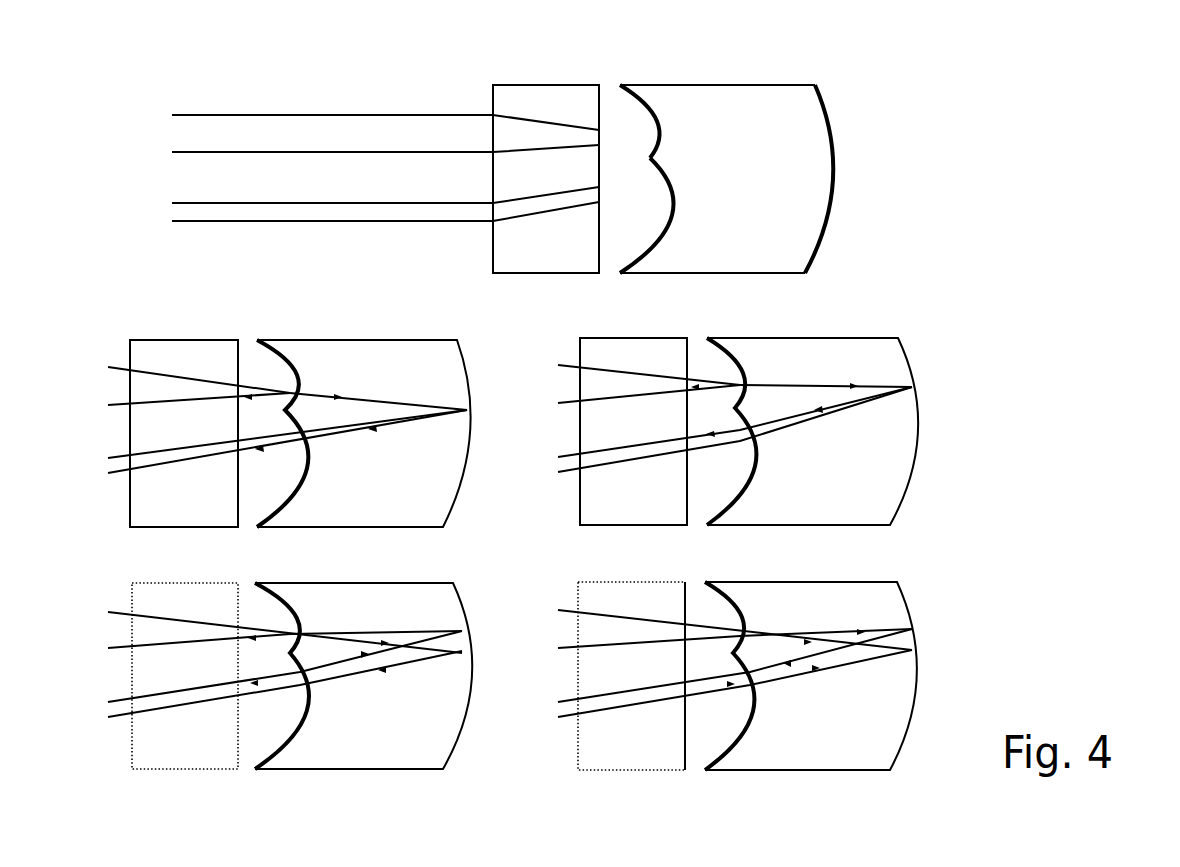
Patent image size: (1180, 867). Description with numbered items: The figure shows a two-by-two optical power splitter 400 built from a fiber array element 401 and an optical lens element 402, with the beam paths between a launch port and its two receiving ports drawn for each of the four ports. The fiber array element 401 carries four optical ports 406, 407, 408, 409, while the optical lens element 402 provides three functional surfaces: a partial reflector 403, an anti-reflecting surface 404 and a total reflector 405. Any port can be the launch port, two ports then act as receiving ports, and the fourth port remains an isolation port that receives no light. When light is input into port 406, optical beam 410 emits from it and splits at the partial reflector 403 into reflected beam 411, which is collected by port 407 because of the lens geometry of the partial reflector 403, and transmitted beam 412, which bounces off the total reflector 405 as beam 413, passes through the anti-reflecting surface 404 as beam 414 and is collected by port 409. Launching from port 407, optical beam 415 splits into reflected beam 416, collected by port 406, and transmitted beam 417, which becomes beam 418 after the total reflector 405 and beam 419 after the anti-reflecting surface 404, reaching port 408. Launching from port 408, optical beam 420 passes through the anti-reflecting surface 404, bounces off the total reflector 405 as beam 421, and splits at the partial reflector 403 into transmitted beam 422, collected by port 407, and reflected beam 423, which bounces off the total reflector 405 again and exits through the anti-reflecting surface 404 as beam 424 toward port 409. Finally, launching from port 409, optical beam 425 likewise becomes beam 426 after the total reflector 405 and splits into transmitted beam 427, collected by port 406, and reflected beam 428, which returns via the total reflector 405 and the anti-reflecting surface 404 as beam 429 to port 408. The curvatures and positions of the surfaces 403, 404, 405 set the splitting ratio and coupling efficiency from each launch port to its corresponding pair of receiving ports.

The optical system 400 is at (1050, 132).
The fiber array element 401 is at (538, 70).
The optical lens element 402 is at (763, 150).
The partial reflector 403 is at (673, 128).
The anti-reflecting surface 404 is at (685, 212).
The total reflector 405 is at (852, 145).
The optical port 406 is at (345, 107).
The optical port 407 is at (353, 162).
The optical port 408 is at (240, 195).
The optical port 409 is at (340, 227).
The optical beam 410 is at (258, 380).
The optical reflected beam 411 is at (252, 405).
The optical transmitted beam 412 is at (360, 393).
The beam 413 is at (373, 440).
The beam 414 is at (248, 460).
The optical beam 415 is at (693, 403).
The optical reflected beam 416 is at (693, 372).
The optical transmitted beam 417 is at (782, 383).
The beam 418 is at (805, 423).
The beam 419 is at (692, 443).
The optical beam 420 is at (248, 672).
The beam 421 is at (345, 620).
The optical transmitted beam 422 is at (247, 628).
The optical reflected beam 423 is at (358, 683).
The beam 424 is at (248, 703).
The optical beam 425 is at (705, 703).
The beam 426 is at (807, 685).
The optical transmitted beam 427 is at (707, 622).
The optical reflected beam 428 is at (793, 622).
The beam 429 is at (700, 668).